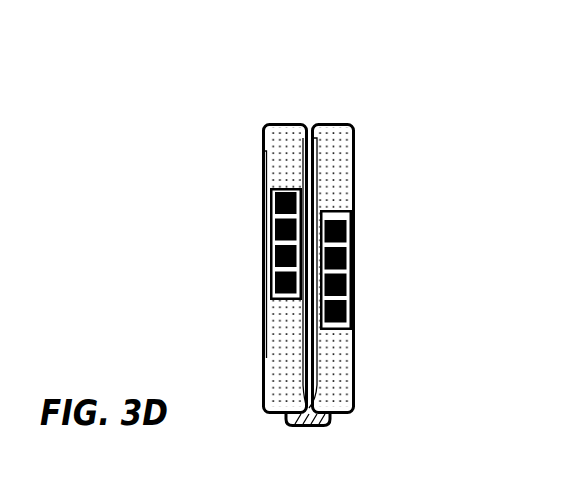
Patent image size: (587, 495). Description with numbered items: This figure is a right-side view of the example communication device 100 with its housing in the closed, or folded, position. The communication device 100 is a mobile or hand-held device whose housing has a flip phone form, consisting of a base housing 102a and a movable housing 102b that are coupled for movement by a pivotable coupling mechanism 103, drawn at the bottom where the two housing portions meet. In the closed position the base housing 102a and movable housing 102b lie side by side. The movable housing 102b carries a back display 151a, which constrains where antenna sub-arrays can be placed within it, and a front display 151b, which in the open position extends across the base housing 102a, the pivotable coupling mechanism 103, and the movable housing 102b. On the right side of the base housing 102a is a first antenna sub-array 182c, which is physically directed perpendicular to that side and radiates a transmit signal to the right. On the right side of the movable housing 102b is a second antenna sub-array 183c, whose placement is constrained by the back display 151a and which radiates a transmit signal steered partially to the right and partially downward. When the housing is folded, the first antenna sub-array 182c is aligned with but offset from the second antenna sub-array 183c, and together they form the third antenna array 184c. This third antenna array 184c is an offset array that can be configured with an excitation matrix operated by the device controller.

The communication device 100 is at (215, 92).
The base housing 102a is at (345, 123).
The movable housing 102b is at (279, 123).
The back display 151a is at (262, 170).
The front display 151b is at (316, 167).
The third antenna array 184c is at (245, 187).
The first antenna sub-array 182c is at (355, 241).
The second antenna sub-array 183c is at (285, 278).
The pivotable coupling mechanism 103 is at (318, 427).